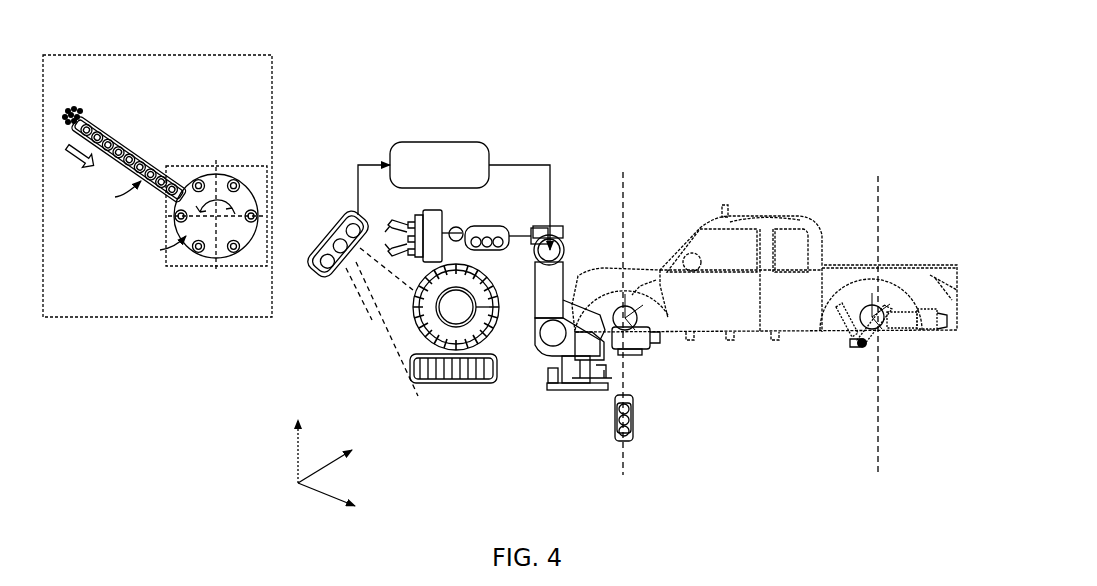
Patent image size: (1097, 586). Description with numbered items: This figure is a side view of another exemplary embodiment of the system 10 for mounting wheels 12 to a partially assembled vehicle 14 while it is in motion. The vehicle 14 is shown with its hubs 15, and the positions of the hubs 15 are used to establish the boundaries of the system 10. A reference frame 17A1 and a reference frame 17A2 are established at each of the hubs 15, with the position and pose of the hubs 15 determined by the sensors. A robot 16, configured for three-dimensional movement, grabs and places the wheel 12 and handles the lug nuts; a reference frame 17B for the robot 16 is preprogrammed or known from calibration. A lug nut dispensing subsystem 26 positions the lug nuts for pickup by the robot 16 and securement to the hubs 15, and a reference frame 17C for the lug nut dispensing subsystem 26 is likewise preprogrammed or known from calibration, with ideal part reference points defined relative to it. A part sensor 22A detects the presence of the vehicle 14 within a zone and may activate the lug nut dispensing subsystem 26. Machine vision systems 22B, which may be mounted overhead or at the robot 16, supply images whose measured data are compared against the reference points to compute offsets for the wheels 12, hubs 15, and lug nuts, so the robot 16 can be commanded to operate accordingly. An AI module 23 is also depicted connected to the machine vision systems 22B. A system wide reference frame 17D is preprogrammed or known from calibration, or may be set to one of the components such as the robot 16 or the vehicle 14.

The system 10 is at (790, 77).
The wheel 12 is at (440, 400).
The vehicle 14 is at (805, 227).
The hub 15 is at (877, 313).
The robot 16 is at (552, 340).
The reference frame 17A1 is at (660, 340).
The reference frame 17A2 is at (896, 352).
The reference frame for the robot 17B is at (571, 387).
The reference frame for the lug nut dispensing subsystem 17C is at (248, 72).
The system wide reference frame 17D is at (283, 456).
The part sensor 22A is at (645, 418).
The machine vision system 22B is at (312, 200).
The AI module 23 is at (473, 142).
The lug nut dispensing subsystem 26 is at (115, 330).